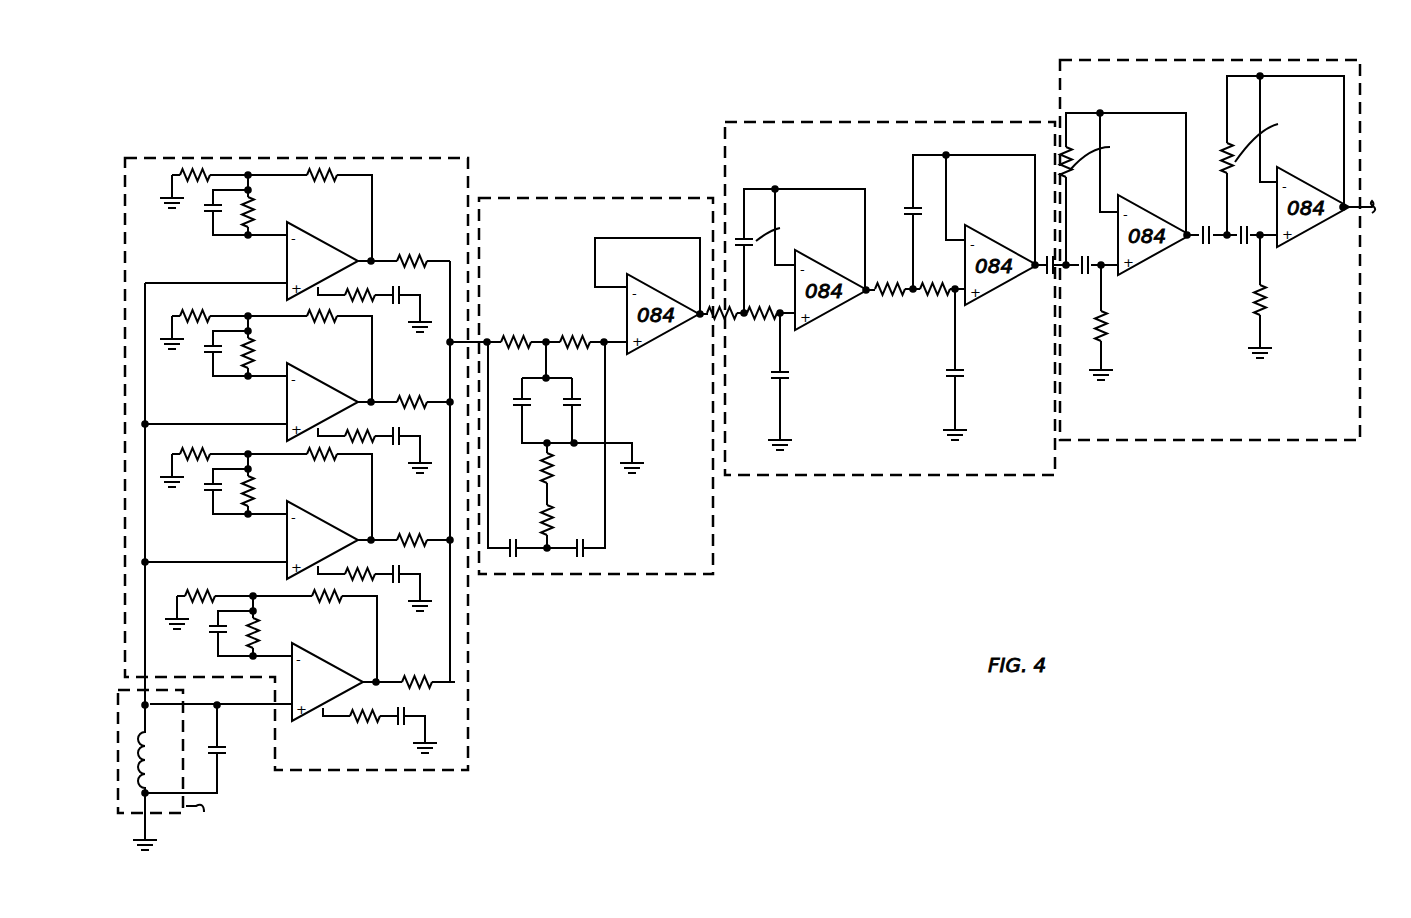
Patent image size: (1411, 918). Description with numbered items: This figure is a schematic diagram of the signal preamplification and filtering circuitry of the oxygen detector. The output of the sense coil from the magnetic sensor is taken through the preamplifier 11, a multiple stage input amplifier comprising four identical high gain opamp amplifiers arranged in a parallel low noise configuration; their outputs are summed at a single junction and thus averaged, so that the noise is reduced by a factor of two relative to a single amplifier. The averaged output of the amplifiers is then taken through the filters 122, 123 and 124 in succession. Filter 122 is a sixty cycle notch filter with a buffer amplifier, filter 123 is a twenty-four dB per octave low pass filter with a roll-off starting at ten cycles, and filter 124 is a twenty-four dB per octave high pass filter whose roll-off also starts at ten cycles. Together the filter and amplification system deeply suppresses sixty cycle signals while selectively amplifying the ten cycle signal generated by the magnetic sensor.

The preamplifier 11 is at (293, 480).
The filter 122 is at (576, 586).
The filter 123 is at (811, 484).
The filter 124 is at (1137, 450).